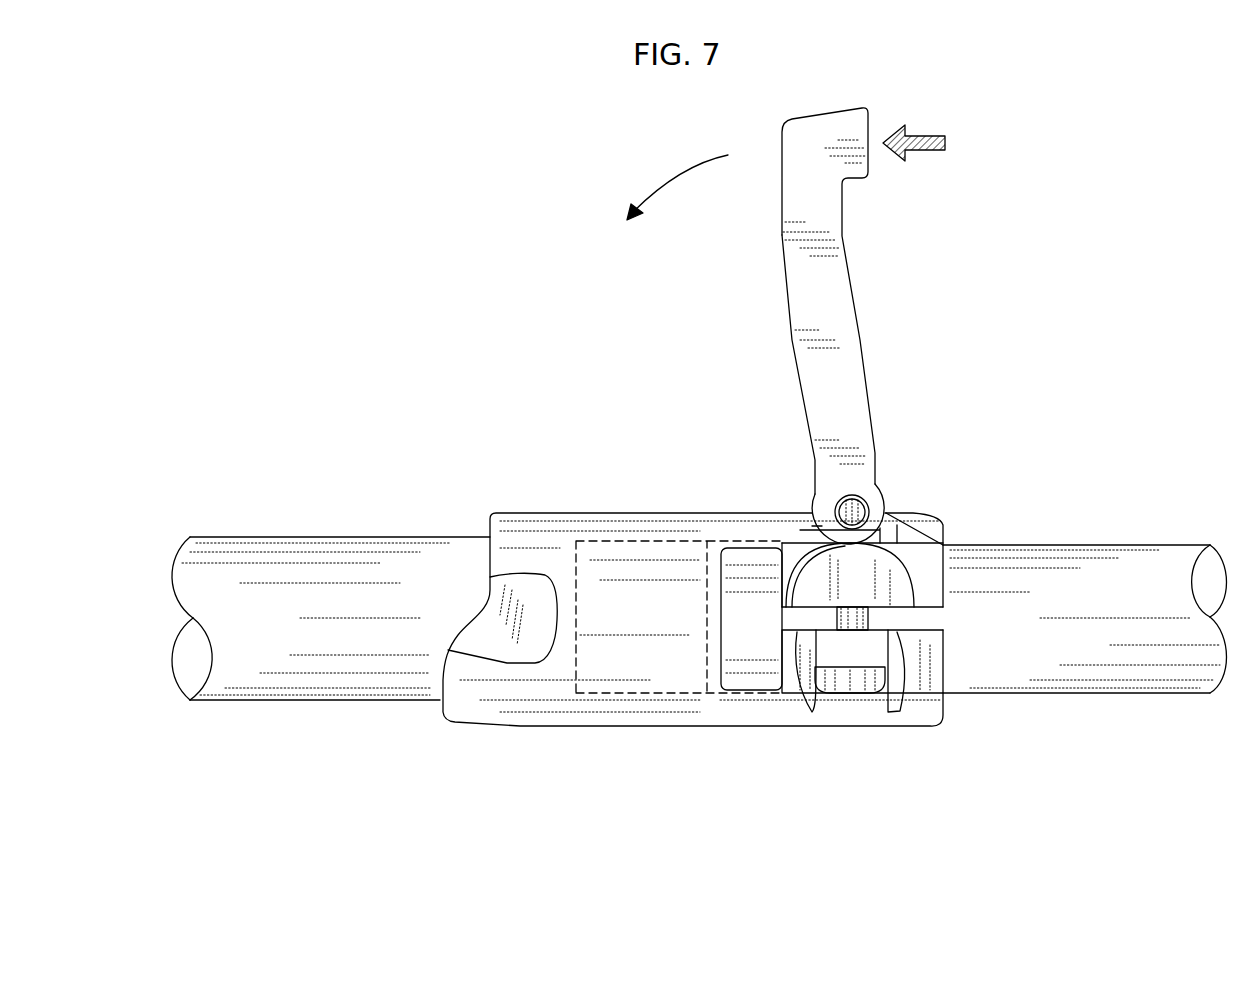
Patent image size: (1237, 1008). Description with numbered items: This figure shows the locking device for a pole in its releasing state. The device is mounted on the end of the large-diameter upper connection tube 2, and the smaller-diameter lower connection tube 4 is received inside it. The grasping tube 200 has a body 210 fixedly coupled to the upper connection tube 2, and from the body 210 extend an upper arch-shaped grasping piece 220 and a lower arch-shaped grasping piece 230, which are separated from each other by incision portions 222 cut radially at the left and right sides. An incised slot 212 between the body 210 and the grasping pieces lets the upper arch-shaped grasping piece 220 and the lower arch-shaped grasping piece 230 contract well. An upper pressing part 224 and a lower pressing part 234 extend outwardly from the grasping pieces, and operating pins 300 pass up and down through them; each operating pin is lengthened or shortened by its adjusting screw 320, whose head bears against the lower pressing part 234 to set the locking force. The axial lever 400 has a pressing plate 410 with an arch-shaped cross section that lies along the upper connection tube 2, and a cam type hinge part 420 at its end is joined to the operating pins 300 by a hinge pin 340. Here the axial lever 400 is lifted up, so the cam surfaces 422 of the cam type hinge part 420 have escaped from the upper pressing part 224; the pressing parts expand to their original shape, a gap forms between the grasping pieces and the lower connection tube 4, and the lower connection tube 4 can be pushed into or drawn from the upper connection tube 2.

The upper connection tube 2 is at (260, 537).
The lower connection tube 4 is at (1132, 545).
The grasping tube 200 is at (693, 606).
The body 210 is at (650, 712).
The incised slot 212 is at (737, 634).
The upper arch-shaped grasping piece 220 is at (943, 578).
The incision portions 222 is at (933, 611).
The upper pressing part 224 is at (933, 565).
The lower arch-shaped grasping piece 230 is at (903, 657).
The lower pressing part 234 is at (923, 692).
The operating pins 300 is at (843, 733).
The adjusting screw 320 is at (800, 695).
The hinge pin 340 is at (860, 497).
The axial lever 400 is at (819, 326).
The pressing plate 410 is at (786, 272).
The cam type hinge part 420 is at (817, 508).
The cam surfaces 422 is at (792, 523).